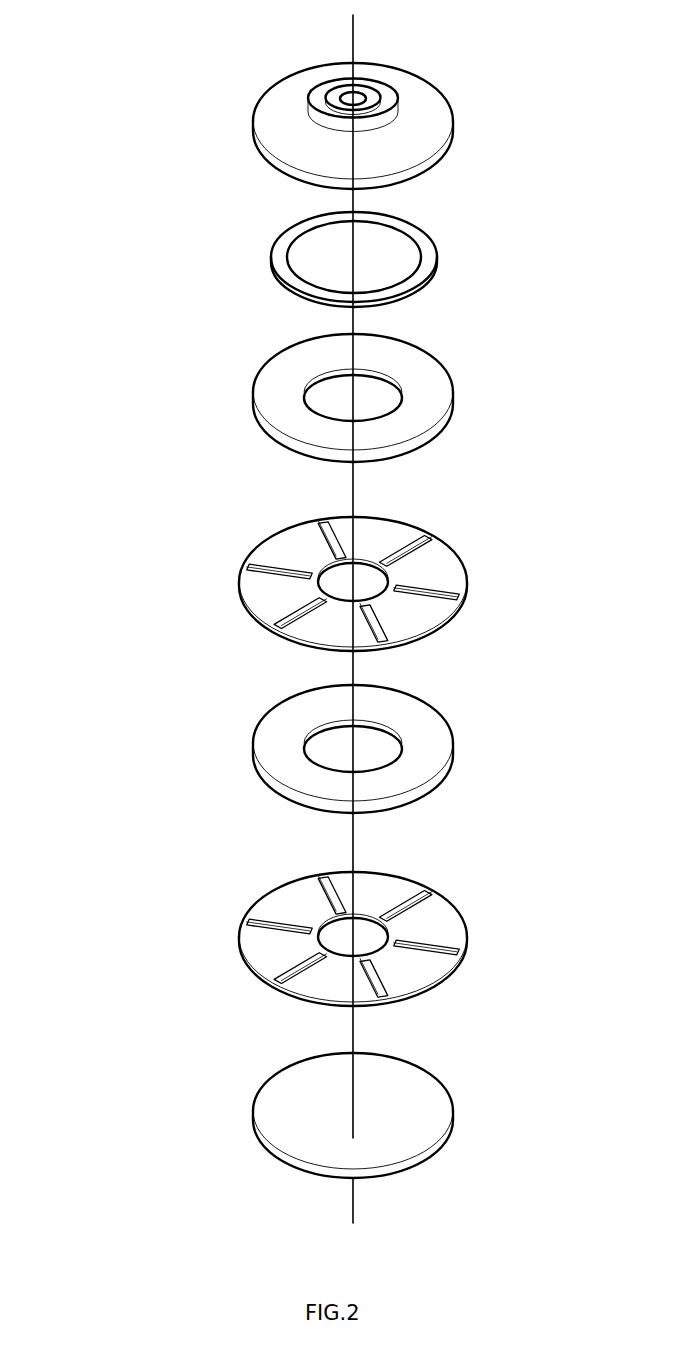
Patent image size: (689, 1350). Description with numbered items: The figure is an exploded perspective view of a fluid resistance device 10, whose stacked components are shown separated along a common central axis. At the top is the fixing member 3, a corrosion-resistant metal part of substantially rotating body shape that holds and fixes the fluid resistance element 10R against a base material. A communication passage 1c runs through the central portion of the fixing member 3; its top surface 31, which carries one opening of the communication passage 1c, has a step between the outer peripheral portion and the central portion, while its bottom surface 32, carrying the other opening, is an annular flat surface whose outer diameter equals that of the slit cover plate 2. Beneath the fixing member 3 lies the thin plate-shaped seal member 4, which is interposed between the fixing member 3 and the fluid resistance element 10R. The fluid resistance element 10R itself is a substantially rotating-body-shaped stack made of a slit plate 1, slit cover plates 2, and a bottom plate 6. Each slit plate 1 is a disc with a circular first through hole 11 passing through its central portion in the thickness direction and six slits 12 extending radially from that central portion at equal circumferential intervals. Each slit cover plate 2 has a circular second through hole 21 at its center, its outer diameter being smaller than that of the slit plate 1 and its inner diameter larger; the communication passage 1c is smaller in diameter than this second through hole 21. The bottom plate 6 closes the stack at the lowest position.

The fluid resistance device 10 is at (64, 108).
The fluid resistance element 10R is at (178, 352).
The slit plate 1 is at (468, 584).
The communication passage 1c is at (358, 95).
The first through hole 11 is at (362, 548).
The slits 12 is at (318, 508).
The slit cover plate 2 is at (455, 400).
The second through hole 21 is at (368, 355).
The fixing member 3 is at (452, 133).
The top surface 31 is at (283, 111).
The bottom surface 32 is at (263, 162).
The seal member 4 is at (440, 256).
The bottom plate 6 is at (455, 1116).